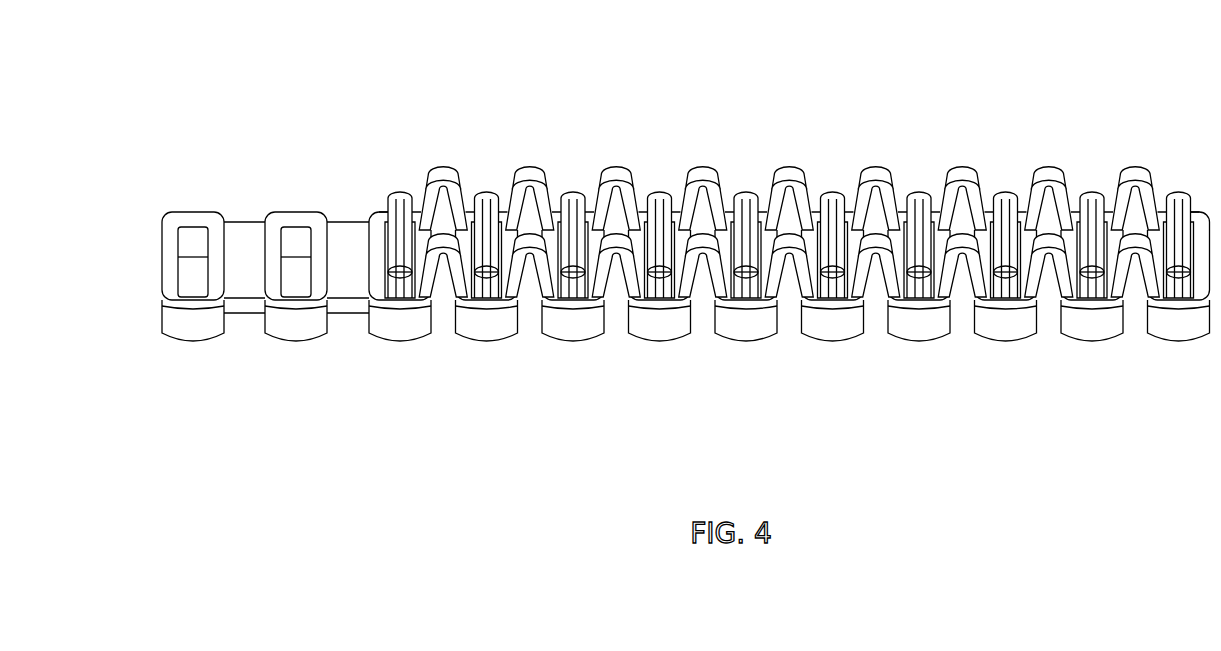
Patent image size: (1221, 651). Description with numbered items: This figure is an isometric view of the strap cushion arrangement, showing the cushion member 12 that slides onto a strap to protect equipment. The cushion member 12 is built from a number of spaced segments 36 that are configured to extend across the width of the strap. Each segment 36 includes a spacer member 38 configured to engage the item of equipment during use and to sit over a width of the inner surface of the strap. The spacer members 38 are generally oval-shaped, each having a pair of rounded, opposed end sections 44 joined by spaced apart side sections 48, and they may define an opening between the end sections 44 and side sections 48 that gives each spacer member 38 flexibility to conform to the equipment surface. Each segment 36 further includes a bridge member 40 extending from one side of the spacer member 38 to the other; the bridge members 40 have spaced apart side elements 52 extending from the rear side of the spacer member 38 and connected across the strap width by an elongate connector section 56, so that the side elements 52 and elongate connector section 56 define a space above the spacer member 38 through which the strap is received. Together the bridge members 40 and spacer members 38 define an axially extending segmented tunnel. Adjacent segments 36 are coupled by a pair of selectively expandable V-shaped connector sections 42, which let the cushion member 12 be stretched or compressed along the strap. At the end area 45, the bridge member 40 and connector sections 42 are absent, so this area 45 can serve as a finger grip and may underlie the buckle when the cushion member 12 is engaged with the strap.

The cushion member 12 is at (686, 257).
The segment 36 is at (927, 342).
The spacer member 38 is at (1083, 335).
The bridge member 40 is at (658, 192).
The V-shaped connector section 42 is at (518, 175).
The end section 44 is at (648, 225).
The end area 45 is at (252, 220).
The side section 48 is at (458, 235).
The side element 52 is at (998, 288).
The elongate connector section 56 is at (997, 213).